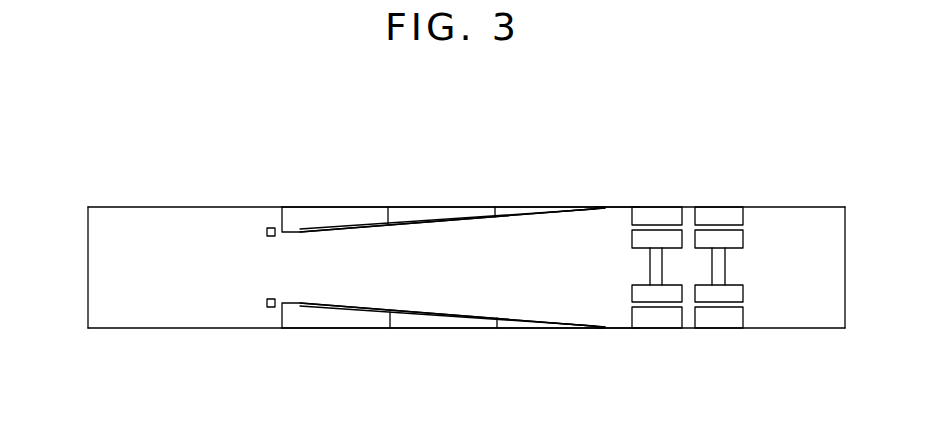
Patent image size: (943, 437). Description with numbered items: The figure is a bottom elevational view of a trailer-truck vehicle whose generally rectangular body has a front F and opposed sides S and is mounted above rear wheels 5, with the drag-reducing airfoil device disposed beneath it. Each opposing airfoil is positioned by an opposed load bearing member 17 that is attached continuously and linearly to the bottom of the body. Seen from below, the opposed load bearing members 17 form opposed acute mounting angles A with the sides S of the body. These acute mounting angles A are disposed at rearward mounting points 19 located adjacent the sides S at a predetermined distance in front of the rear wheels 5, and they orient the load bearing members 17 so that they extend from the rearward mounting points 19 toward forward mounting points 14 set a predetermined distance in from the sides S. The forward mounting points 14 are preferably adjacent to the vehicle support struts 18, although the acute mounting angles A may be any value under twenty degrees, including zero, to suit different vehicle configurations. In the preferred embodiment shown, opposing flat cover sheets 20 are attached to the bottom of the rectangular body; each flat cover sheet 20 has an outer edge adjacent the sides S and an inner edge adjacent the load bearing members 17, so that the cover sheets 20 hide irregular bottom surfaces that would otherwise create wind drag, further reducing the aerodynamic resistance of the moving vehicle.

The rear wheels 5 is at (682, 250).
The forward mounting points 14 is at (281, 212).
The load bearing members 17 is at (338, 318).
The vehicle support struts 18 is at (267, 228).
The rearward mounting points 19 is at (603, 206).
The flat cover sheets 20 is at (340, 217).
The sides S is at (150, 207).
The front F is at (88, 270).
The acute mounting angles A is at (329, 288).